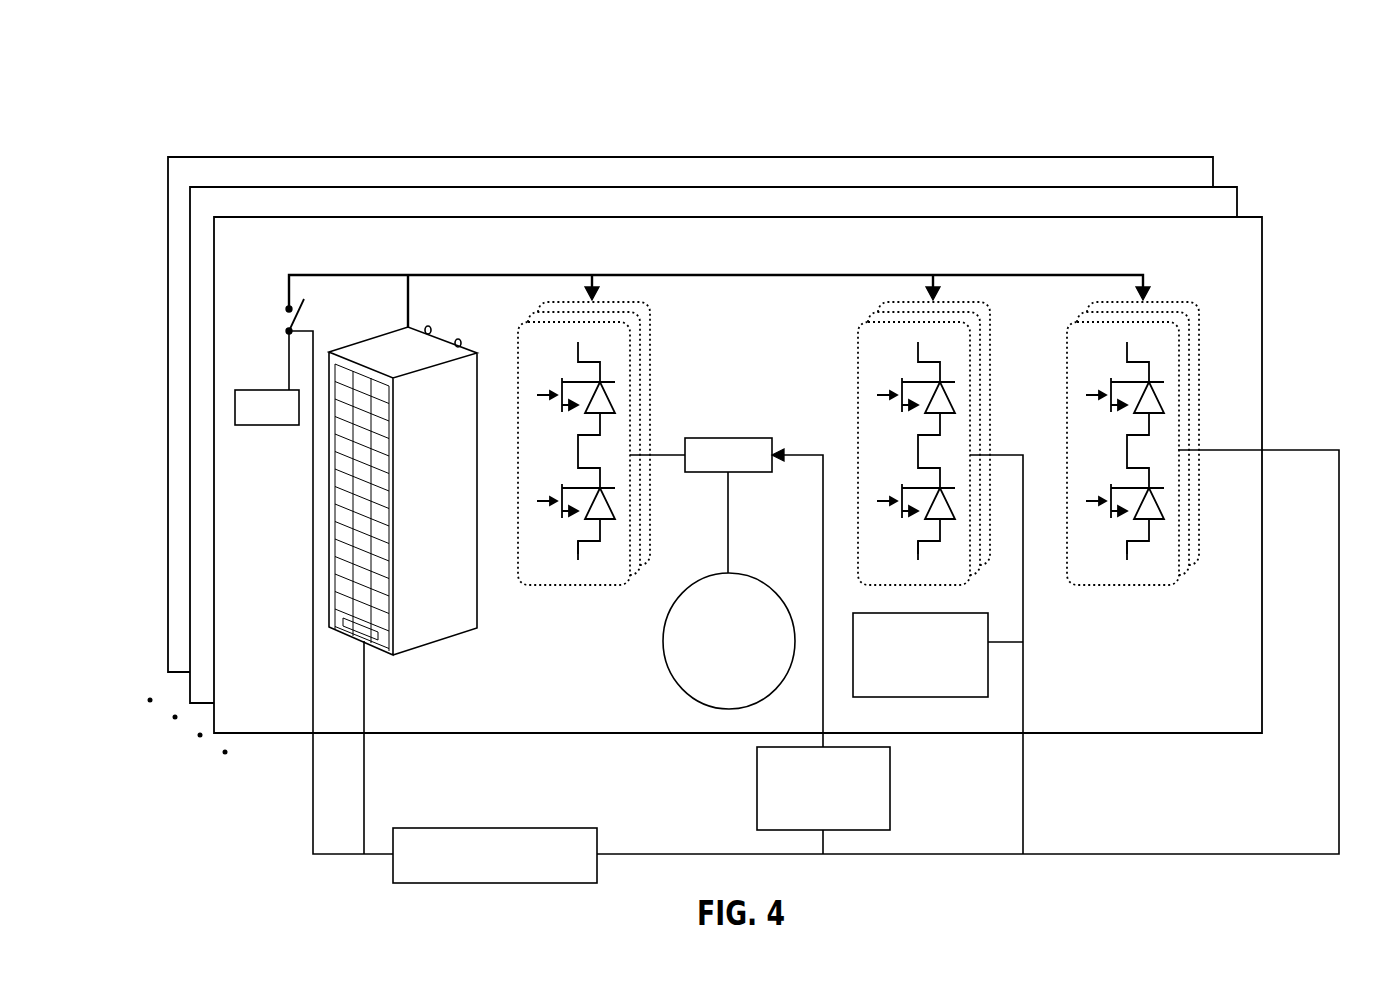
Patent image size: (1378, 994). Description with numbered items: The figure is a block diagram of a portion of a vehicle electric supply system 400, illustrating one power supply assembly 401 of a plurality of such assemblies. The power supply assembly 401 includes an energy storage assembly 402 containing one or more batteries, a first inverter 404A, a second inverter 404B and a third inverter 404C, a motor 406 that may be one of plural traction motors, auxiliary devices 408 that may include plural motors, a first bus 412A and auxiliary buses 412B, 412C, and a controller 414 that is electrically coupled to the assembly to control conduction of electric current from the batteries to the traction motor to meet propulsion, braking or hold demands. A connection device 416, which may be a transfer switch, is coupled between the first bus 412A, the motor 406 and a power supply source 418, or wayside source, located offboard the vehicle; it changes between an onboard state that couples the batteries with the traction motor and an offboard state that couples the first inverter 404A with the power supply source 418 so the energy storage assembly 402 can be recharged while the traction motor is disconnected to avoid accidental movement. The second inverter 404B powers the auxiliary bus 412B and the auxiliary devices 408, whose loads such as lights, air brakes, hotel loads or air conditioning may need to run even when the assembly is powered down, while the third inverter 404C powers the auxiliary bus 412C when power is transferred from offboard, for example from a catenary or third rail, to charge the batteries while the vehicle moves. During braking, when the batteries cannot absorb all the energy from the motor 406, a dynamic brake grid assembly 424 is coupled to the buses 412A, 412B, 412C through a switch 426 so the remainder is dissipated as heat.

The vehicle electric supply system 400 is at (1032, 107).
The power supply assembly 401 is at (1180, 147).
The energy storage assembly 402 is at (433, 625).
The first inverter 404A is at (610, 357).
The second inverter 404B is at (948, 357).
The third inverter 404C is at (1165, 355).
The motor 406 is at (662, 640).
The auxiliary devices 408 is at (988, 655).
The first bus 412A is at (593, 283).
The auxiliary bus 412B is at (935, 283).
The auxiliary bus 412C is at (1145, 283).
The controller 414 is at (495, 827).
The connection device 416 is at (727, 438).
The power supply source 418 is at (755, 788).
The dynamic brake grid assembly 424 is at (268, 427).
The switch 426 is at (292, 325).